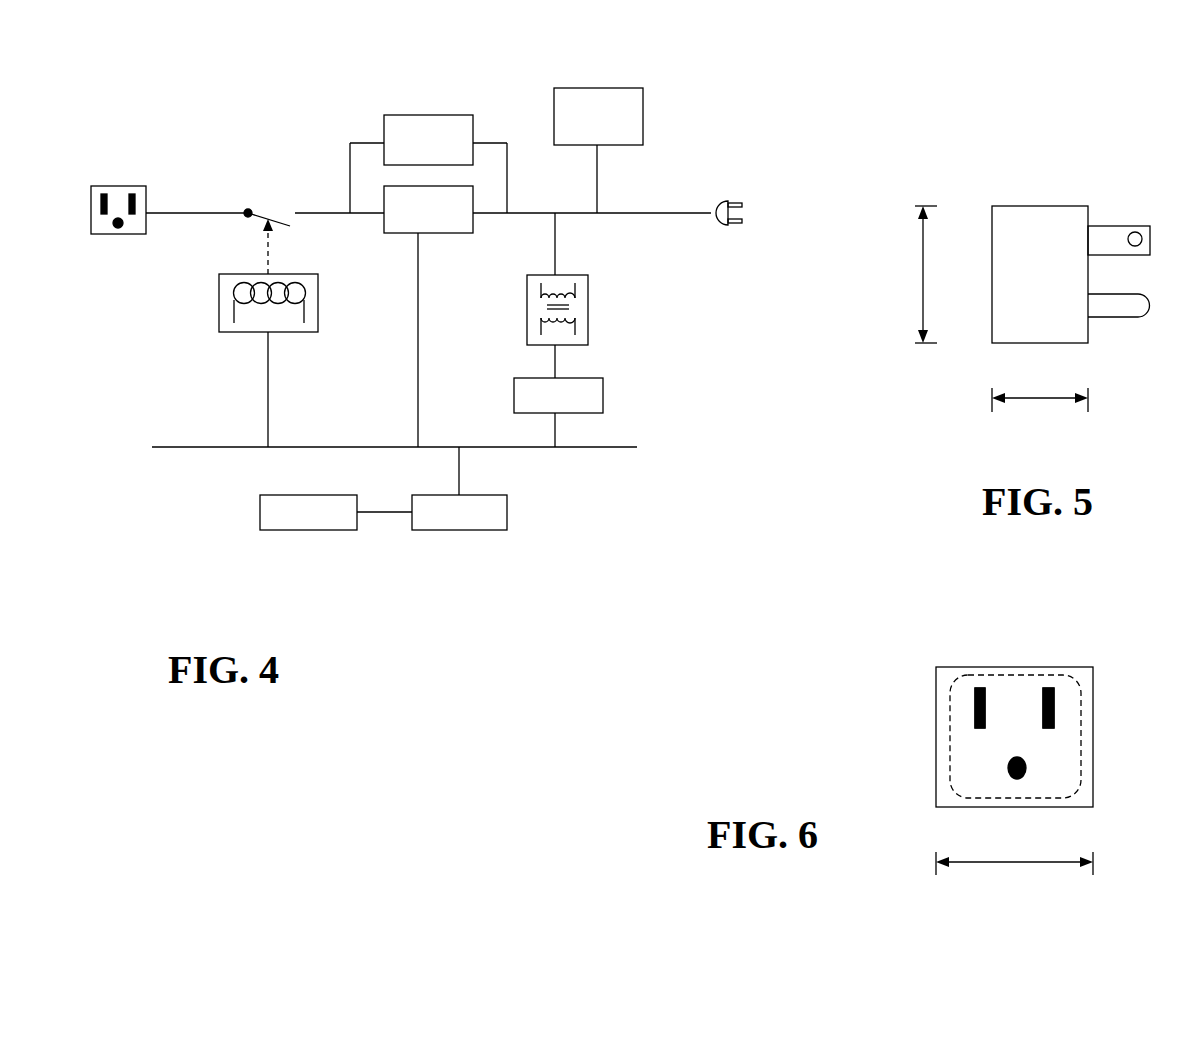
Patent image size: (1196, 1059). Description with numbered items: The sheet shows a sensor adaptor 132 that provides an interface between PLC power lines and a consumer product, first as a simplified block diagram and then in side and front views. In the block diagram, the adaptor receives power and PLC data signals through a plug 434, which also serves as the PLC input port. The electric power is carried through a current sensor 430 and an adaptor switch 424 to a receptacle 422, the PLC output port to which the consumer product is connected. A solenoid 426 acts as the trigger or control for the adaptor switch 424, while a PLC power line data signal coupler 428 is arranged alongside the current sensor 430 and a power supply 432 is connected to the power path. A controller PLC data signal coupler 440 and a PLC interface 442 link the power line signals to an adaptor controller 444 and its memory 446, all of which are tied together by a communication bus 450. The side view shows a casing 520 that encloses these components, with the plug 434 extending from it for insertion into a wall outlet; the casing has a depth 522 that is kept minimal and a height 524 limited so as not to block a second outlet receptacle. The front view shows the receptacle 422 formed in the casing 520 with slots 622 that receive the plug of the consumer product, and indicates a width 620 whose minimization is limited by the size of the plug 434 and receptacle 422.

In FIG. 4, the sensor adaptor 132 is at (603, 522).
In FIG. 5, the sensor adaptor 132 is at (997, 290).
In FIG. 6, the sensor adaptor 132 is at (1005, 749).
In FIG. 4, the receptacle 422 is at (117, 184).
In FIG. 6, the receptacle 422 is at (1026, 685).
In FIG. 4, the adaptor switch 424 is at (260, 203).
In FIG. 4, the solenoid 426 is at (219, 300).
In FIG. 4, the PLC power line data signal coupler 428 is at (400, 113).
In FIG. 4, the current sensor 430 is at (448, 233).
In FIG. 4, the power supply 432 is at (645, 106).
In FIG. 4, the plug 434 is at (725, 198).
In FIG. 5, the plug 434 is at (1120, 226).
In FIG. 4, the controller PLC data signal coupler 440 is at (590, 298).
In FIG. 4, the PLC interface 442 is at (605, 394).
In FIG. 4, the adaptor controller 444 is at (425, 531).
In FIG. 4, the memory 446 is at (270, 531).
In FIG. 4, the communication bus 450 is at (160, 448).
In FIG. 5, the casing 520 is at (998, 206).
In FIG. 6, the casing 520 is at (955, 667).
In FIG. 5, the depth 522 is at (1033, 400).
In FIG. 5, the height 524 is at (920, 264).
In FIG. 6, the width 620 is at (985, 864).
In FIG. 6, the slots 622 is at (975, 709).